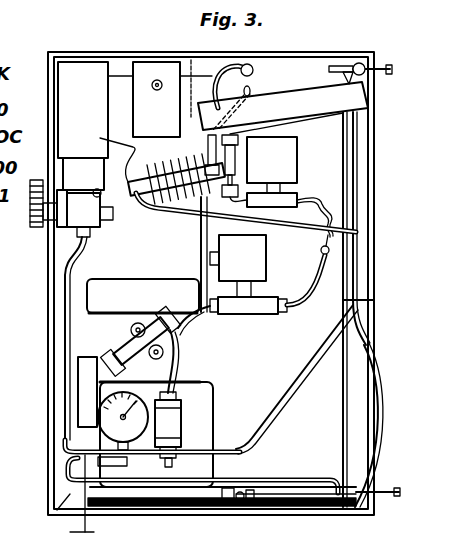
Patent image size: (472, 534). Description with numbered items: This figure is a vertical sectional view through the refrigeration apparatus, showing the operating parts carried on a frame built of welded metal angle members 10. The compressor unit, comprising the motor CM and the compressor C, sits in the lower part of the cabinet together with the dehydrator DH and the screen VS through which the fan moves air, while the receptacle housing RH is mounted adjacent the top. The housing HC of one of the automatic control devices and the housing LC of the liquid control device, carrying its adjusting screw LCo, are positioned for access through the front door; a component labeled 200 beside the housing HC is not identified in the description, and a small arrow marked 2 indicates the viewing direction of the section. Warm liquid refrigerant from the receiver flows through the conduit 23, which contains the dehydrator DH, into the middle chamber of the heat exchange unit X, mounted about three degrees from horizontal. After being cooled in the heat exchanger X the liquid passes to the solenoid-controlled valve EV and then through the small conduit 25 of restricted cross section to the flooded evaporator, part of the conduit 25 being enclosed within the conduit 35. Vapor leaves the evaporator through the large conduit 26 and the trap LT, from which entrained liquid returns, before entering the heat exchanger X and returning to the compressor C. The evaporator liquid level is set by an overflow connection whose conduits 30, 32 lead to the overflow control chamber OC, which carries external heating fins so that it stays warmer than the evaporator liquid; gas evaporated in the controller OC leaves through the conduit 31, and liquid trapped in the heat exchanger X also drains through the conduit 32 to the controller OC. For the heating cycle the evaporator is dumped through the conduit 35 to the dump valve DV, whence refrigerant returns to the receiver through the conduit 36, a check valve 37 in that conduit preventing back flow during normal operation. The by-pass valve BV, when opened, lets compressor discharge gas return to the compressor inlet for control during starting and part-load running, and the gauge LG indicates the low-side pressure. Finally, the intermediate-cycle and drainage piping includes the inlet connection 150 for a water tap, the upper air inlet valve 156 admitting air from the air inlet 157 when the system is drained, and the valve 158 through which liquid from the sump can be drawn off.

The housing of automatic control device HC is at (62, 70).
The control box 200 is at (98, 160).
The by-pass valve BV is at (30, 213).
The housing of liquid control device LC is at (172, 98).
The adjusting screw LCo is at (155, 80).
The conduit 32 is at (206, 141).
The trap LT is at (218, 73).
The direction of view 2 is at (198, 47).
The large conduit 26 is at (247, 63).
The conduit 30 is at (253, 93).
The heat exchange device X is at (283, 108).
The valve 158 is at (337, 66).
The upper air inlet valve 156 is at (370, 46).
The air inlet 157 is at (392, 59).
The receptacle housing RH is at (312, 131).
The solenoid-controlled valve EV is at (272, 172).
The small conduit 25 is at (316, 202).
The overflow control chamber OC is at (164, 172).
The conduit 31 is at (165, 219).
The dump valve DV is at (248, 274).
The conduit 35 is at (313, 281).
The conduit 36 is at (187, 336).
The welded metal angle members 10 is at (55, 295).
The conduit 23 is at (266, 415).
The motor CM is at (75, 425).
The gauge LG is at (100, 413).
The compressor C is at (200, 424).
The check valve 37 is at (178, 427).
The screen VS is at (12, 476).
The dehydrator DH is at (276, 494).
The inlet connection 150 is at (389, 497).